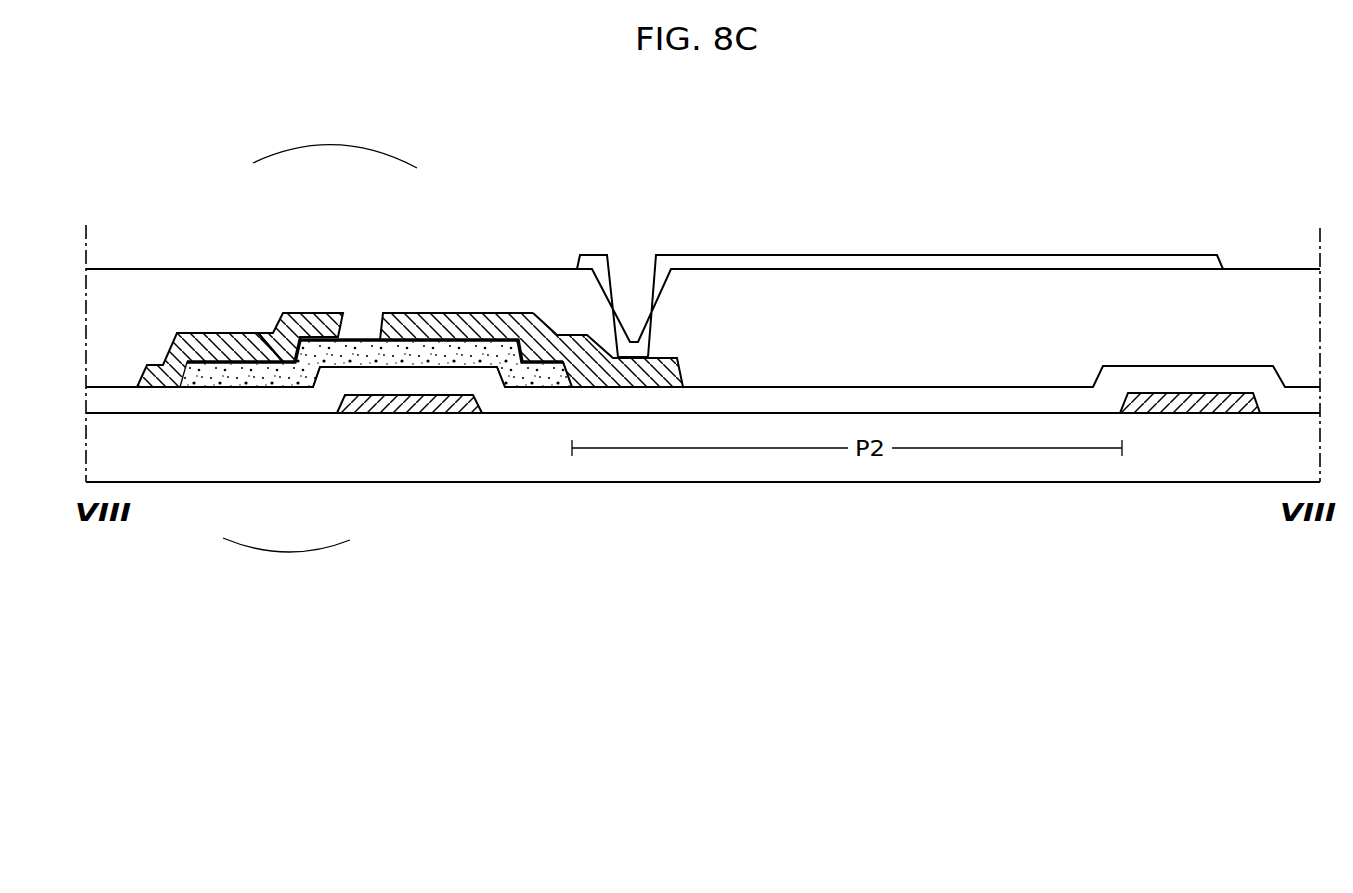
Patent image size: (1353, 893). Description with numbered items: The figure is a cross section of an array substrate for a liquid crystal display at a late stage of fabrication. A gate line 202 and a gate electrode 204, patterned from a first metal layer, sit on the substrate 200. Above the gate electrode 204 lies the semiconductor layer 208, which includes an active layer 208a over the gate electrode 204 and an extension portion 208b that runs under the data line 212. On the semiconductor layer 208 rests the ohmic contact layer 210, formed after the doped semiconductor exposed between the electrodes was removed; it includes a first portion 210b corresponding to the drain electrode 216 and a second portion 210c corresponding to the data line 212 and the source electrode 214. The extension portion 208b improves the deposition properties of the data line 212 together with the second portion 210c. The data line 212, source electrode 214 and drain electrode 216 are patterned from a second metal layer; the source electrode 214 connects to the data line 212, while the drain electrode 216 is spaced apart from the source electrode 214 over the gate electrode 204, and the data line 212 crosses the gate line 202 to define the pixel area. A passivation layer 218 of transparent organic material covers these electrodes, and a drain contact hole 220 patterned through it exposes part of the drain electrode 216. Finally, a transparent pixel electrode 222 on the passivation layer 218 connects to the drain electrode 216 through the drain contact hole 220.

The substrate 200 is at (1232, 457).
The gate line 202 is at (1190, 392).
The gate electrode 204 is at (442, 413).
The semiconductor layer 208 is at (286, 558).
The active layer 208a is at (385, 364).
The extension portion 208b is at (240, 387).
The ohmic contact layer 210 is at (335, 143).
The first portion 210b is at (432, 335).
The second portion 210c is at (268, 330).
The data line 212 is at (190, 333).
The source electrode 214 is at (312, 313).
The drain electrode 216 is at (533, 313).
The passivation layer 218 is at (850, 278).
The drain contact hole 220 is at (636, 257).
The pixel electrode 222 is at (742, 253).